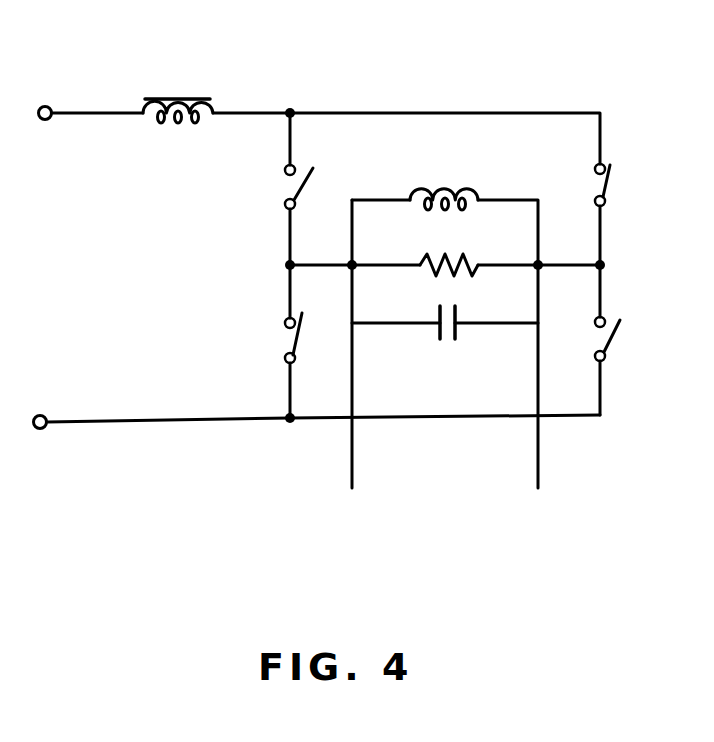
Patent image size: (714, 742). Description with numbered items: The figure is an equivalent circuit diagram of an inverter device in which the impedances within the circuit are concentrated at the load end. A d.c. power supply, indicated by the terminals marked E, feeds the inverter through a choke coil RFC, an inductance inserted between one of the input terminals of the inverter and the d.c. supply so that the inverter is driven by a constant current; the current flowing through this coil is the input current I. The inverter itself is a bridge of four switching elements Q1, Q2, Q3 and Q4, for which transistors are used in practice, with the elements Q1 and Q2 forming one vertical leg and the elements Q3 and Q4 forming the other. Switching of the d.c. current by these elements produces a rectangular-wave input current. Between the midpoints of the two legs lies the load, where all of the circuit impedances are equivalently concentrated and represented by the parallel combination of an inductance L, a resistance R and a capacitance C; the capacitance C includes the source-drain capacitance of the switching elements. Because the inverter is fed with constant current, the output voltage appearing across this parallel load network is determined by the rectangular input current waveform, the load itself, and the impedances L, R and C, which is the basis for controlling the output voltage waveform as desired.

The choke coil RFC is at (178, 96).
The switching element Q1 is at (274, 187).
The switching element Q2 is at (270, 338).
The switching element Q3 is at (623, 185).
The switching element Q4 is at (627, 339).
The inductance L is at (444, 182).
The resistance R is at (449, 250).
The capacitance C is at (460, 315).
The supply voltage E is at (42, 122).
The input current I is at (92, 120).